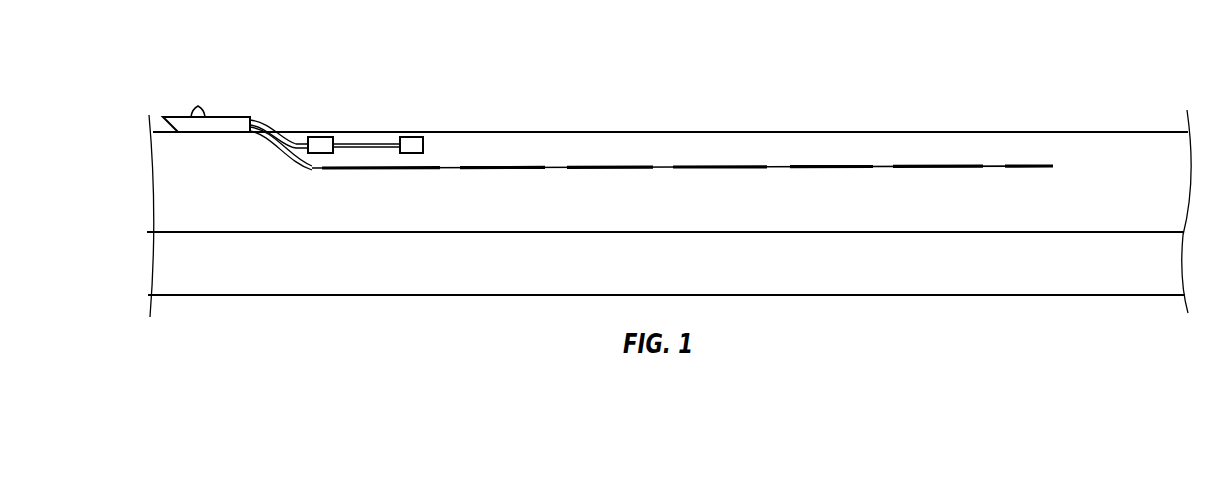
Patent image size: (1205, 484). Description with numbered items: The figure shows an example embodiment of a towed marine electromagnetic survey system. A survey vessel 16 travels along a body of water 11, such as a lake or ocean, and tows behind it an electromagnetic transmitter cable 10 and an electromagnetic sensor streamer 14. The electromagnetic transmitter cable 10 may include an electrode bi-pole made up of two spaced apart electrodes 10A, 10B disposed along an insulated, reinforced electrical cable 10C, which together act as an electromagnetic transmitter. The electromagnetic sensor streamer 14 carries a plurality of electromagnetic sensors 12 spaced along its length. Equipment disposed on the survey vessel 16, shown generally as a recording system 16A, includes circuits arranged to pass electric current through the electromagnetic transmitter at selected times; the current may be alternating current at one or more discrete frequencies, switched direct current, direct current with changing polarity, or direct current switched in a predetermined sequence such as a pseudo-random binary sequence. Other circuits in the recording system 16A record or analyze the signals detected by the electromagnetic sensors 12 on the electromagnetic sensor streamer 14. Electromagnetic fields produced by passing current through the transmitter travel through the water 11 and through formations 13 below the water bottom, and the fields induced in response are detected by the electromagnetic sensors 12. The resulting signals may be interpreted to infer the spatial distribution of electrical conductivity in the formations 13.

The electromagnetic transmitter cable 10 is at (292, 129).
The electrode 10A is at (322, 147).
The electrode 10B is at (413, 147).
The insulated, reinforced electrical cable 10C is at (359, 144).
The body of water 11 is at (162, 183).
The electromagnetic sensors 12 is at (553, 167).
The formations 13 is at (158, 265).
The electromagnetic sensor streamer 14 is at (625, 167).
The survey vessel 16 is at (229, 117).
The recording system 16A is at (198, 106).